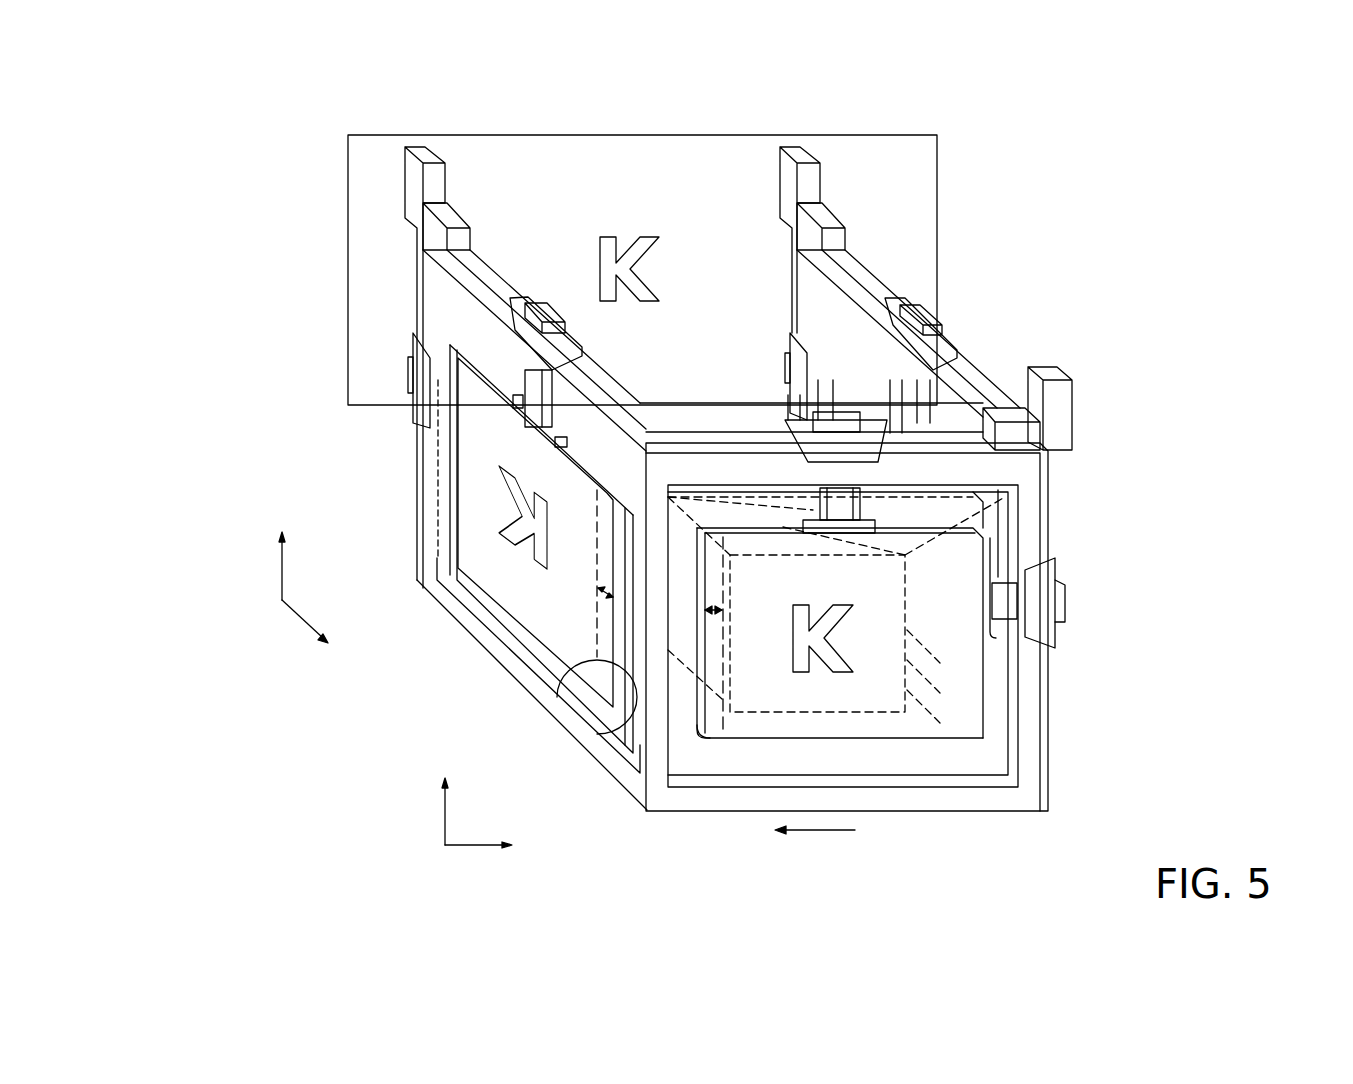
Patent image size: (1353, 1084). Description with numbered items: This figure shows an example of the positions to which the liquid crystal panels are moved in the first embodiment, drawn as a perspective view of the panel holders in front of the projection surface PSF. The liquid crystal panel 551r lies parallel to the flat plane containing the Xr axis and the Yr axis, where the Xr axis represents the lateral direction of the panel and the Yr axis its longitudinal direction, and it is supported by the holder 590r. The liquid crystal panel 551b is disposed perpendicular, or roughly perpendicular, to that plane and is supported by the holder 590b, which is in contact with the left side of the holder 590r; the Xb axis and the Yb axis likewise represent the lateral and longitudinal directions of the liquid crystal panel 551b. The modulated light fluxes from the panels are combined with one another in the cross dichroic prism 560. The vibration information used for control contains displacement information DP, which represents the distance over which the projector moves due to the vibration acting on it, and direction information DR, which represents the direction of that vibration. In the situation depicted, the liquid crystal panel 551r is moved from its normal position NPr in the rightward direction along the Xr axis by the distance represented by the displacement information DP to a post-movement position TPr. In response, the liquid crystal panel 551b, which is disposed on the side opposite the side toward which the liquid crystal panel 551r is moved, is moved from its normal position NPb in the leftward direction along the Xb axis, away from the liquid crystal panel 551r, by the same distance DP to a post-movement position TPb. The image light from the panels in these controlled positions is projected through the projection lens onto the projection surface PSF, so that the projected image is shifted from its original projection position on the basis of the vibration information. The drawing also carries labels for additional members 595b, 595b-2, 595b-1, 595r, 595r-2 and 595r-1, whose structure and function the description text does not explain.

The projection surface PSF is at (928, 165).
The blue light support member 595b is at (215, 175).
The blue support post 595b-2 is at (410, 181).
The blue support block 595b-1 is at (425, 218).
The red light support member 595r is at (1183, 390).
The red support post 595r-2 is at (1057, 400).
The red support block 595r-1 is at (1017, 440).
The holder 590b is at (483, 637).
The holder 590r is at (921, 812).
The liquid crystal panel 551b is at (607, 653).
The liquid crystal panel 551r is at (957, 575).
The cross dichroic prism 560 is at (765, 490).
The displacement information DP is at (716, 604).
The post-movement position TPb is at (458, 562).
The post-movement position TPr is at (1005, 572).
The normal position NPb is at (628, 672).
The normal position NPr is at (714, 722).
The direction information DR is at (815, 832).
The Yb axis Yb is at (280, 554).
The Xb axis Xb is at (317, 634).
The Yr axis Yr is at (444, 799).
The Xr axis Xr is at (493, 847).